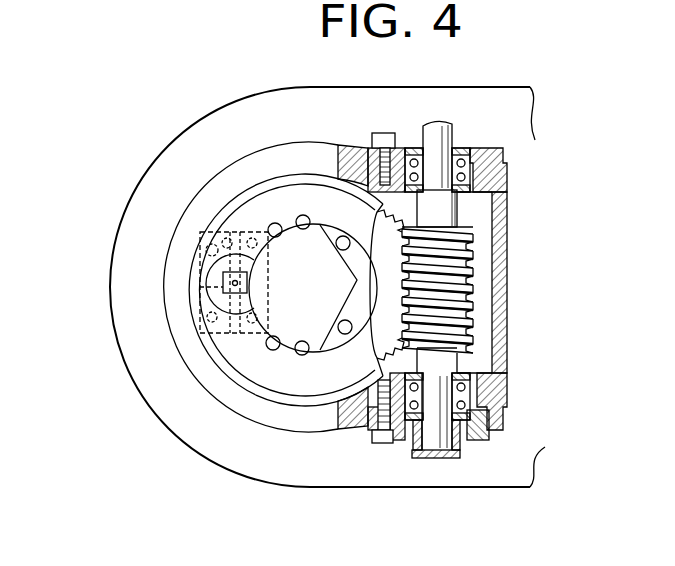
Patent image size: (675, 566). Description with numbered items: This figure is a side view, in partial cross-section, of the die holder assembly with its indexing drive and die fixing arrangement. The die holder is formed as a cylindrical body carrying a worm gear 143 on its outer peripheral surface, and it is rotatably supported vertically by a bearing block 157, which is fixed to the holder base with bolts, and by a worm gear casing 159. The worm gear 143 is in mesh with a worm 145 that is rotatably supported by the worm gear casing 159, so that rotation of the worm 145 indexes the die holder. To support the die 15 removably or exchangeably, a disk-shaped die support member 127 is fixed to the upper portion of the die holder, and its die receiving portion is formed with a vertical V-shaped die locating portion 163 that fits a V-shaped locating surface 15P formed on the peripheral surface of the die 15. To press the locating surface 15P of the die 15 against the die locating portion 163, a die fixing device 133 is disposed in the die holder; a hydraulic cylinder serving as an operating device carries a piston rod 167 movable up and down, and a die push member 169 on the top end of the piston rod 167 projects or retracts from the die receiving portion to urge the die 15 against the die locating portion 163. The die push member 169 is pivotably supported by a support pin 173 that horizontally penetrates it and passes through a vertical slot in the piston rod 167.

The die 15 is at (283, 350).
The V-shaped locating surface 15P is at (325, 278).
The die support member 127 is at (265, 190).
The die fixing device 133 is at (232, 334).
The worm gear 143 is at (347, 148).
The worm 145 is at (478, 297).
The bearing block 157 is at (463, 471).
The worm gear casing 159 is at (503, 207).
The die locating portion 163 is at (330, 343).
The piston rod 167 is at (214, 300).
The die push member 169 is at (222, 290).
The support pin 173 is at (200, 267).